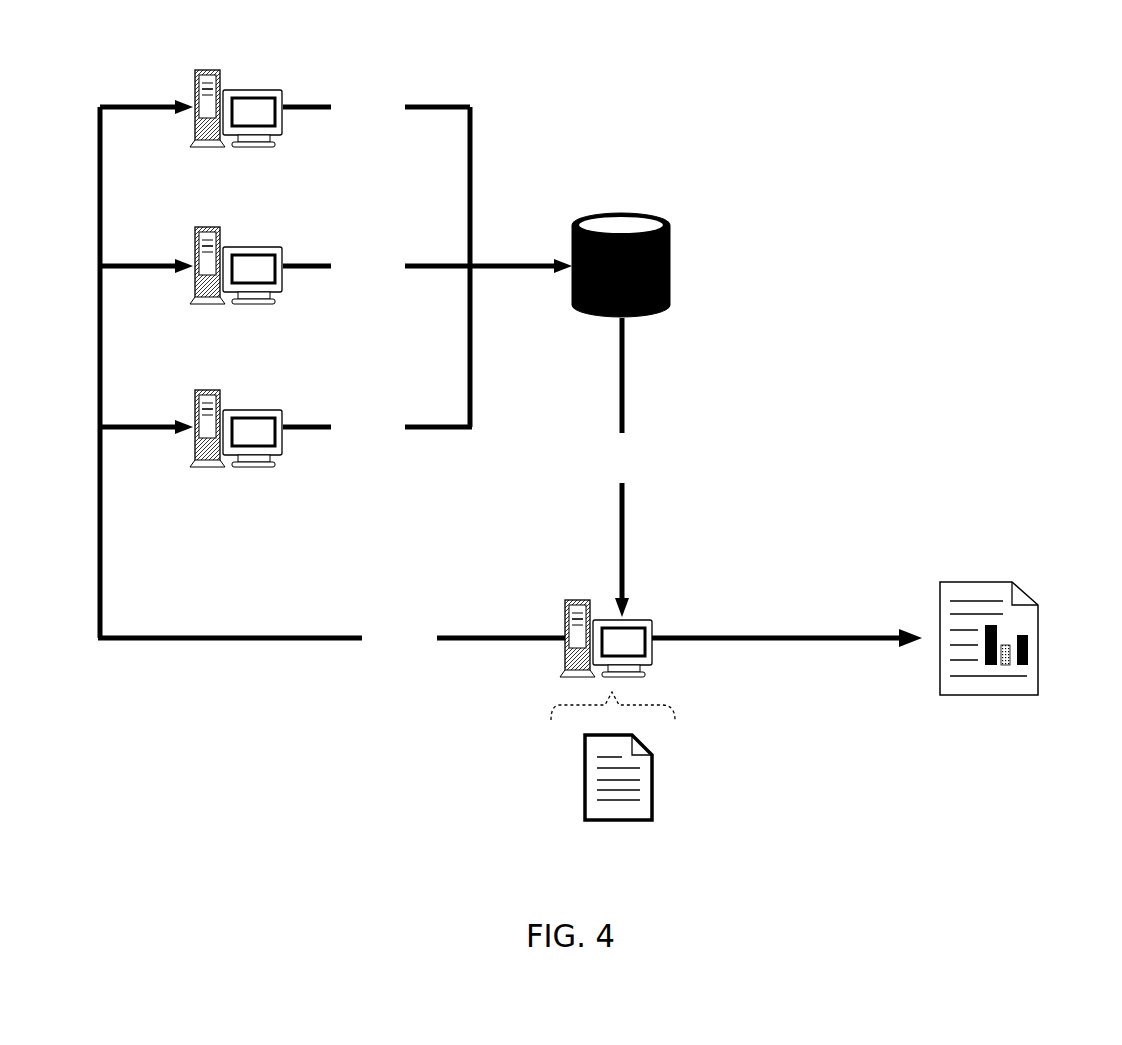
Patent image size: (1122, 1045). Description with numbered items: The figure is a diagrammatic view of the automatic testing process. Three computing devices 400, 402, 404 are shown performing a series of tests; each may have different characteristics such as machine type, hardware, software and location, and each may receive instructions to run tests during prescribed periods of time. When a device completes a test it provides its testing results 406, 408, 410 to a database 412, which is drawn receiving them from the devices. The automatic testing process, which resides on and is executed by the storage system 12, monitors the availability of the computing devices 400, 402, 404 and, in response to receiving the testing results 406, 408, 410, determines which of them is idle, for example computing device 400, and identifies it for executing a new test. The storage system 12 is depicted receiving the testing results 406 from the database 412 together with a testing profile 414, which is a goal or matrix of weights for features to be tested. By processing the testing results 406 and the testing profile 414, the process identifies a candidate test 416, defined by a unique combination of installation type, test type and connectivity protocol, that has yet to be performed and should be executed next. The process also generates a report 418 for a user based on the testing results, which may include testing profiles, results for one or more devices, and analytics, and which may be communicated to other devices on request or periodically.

The computing device 400 is at (193, 79).
The computing device 402 is at (196, 237).
The computing device 404 is at (196, 401).
The testing results 406 is at (470, 352).
The testing results 408 is at (427, 267).
The testing results 410 is at (377, 430).
The database 412 is at (672, 232).
The storage system 12 is at (652, 622).
The testing profile 414 is at (652, 770).
The candidate test 416 is at (510, 641).
The report 418 is at (1038, 602).